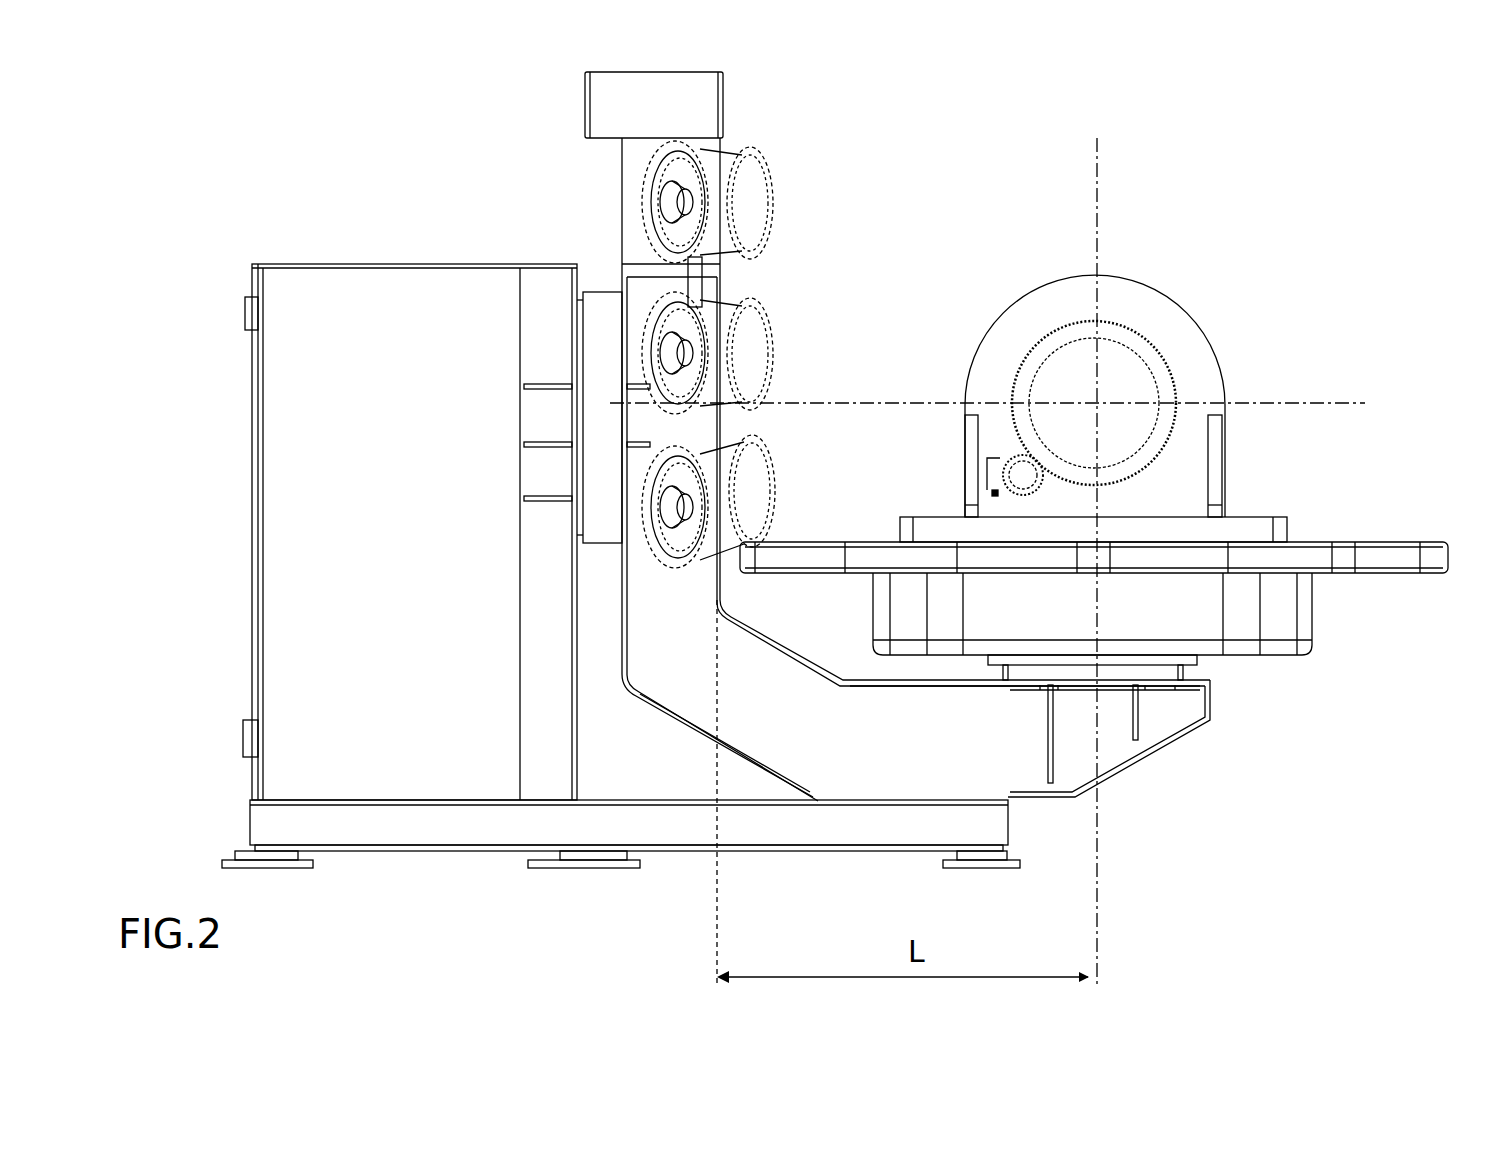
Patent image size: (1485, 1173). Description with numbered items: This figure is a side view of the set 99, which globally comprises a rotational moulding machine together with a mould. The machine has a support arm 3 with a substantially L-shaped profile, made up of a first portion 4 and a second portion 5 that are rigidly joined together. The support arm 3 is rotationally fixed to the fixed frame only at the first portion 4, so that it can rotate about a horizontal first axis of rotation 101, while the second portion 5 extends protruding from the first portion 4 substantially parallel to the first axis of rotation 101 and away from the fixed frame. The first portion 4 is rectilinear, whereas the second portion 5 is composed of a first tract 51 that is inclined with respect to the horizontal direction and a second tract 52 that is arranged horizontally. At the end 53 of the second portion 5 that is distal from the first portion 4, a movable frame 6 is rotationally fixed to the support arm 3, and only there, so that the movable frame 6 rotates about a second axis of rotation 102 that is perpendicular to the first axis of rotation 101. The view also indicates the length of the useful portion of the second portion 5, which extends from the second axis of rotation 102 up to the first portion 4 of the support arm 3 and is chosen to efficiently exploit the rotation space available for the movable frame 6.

The support arm 3 is at (620, 718).
The first portion 4 is at (612, 228).
The second portion 5 is at (950, 822).
The first tract 51 is at (795, 700).
The second tract 52 is at (897, 760).
The end 53 is at (1168, 760).
The movable frame 6 is at (1332, 660).
The set 99 is at (1307, 178).
The first axis of rotation 101 is at (1313, 400).
The second axis of rotation 102 is at (1097, 173).